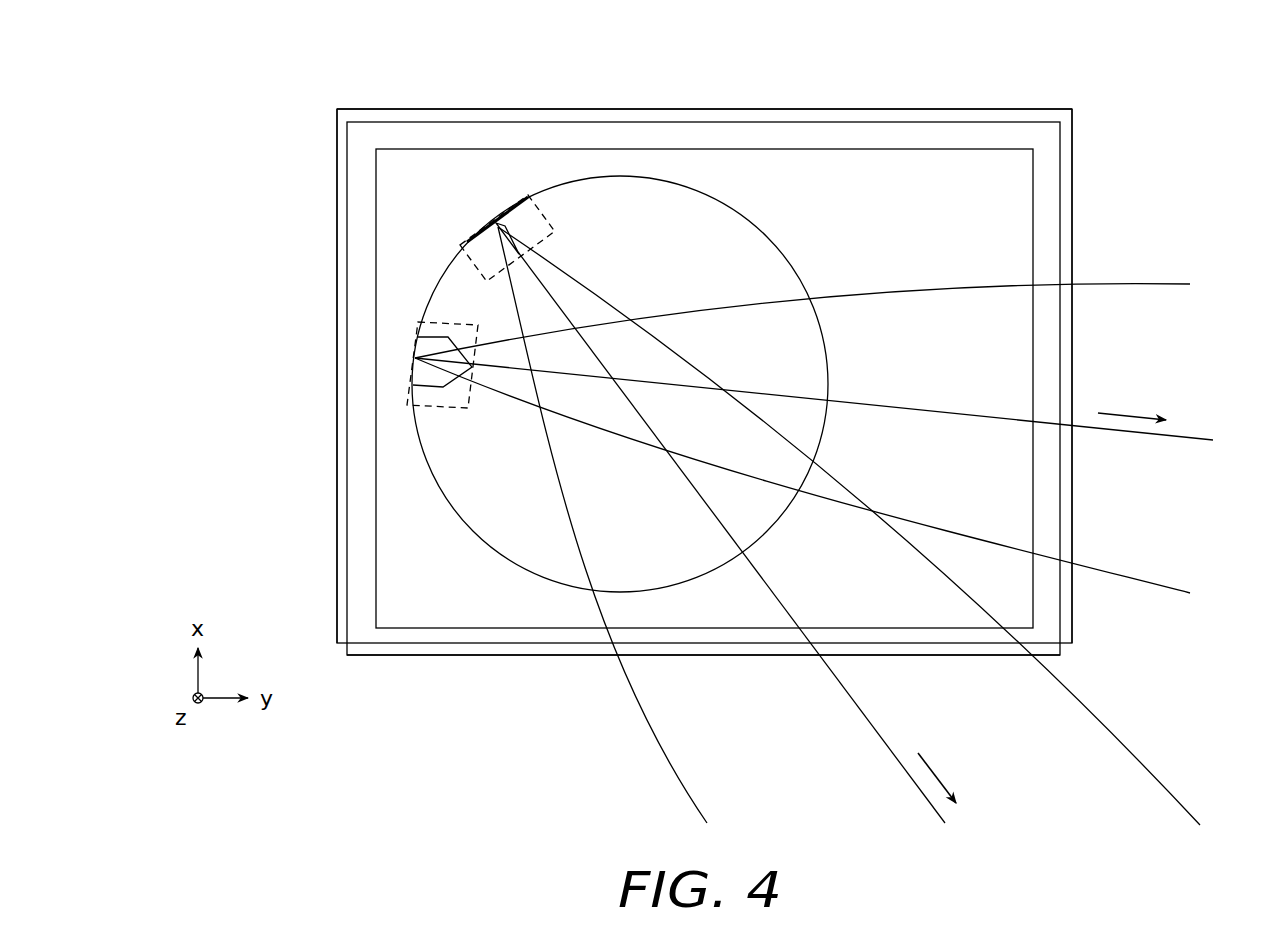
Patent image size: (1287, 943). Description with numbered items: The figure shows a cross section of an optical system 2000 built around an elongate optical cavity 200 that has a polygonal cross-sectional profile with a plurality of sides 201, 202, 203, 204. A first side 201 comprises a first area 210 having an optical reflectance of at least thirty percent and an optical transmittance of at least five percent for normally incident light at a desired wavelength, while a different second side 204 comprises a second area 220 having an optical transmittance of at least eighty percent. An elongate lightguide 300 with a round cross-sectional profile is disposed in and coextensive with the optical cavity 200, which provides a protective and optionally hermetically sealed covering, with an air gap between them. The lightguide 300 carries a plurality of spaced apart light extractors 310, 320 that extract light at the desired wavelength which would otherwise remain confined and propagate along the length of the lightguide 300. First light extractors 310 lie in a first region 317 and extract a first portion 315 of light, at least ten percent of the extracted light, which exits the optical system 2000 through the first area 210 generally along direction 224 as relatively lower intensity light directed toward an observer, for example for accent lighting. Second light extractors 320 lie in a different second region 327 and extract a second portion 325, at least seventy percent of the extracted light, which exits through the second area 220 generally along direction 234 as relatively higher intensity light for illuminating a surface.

The optical system 2000 is at (1157, 114).
The optical cavity 200 is at (337, 438).
The first side 201 is at (1073, 327).
The side 202 is at (780, 108).
The side 203 is at (337, 373).
The second side 204 is at (908, 657).
The first area 210 is at (1073, 199).
The second area 220 is at (423, 657).
The direction 224 is at (1118, 413).
The direction 234 is at (932, 770).
The lightguide 300 is at (437, 490).
The first light extractors 310 is at (415, 357).
The first portion of light 315 is at (903, 290).
The first region 317 is at (443, 320).
The second light extractors 320 is at (493, 224).
The second portion of light 325 is at (868, 723).
The second region 327 is at (520, 205).